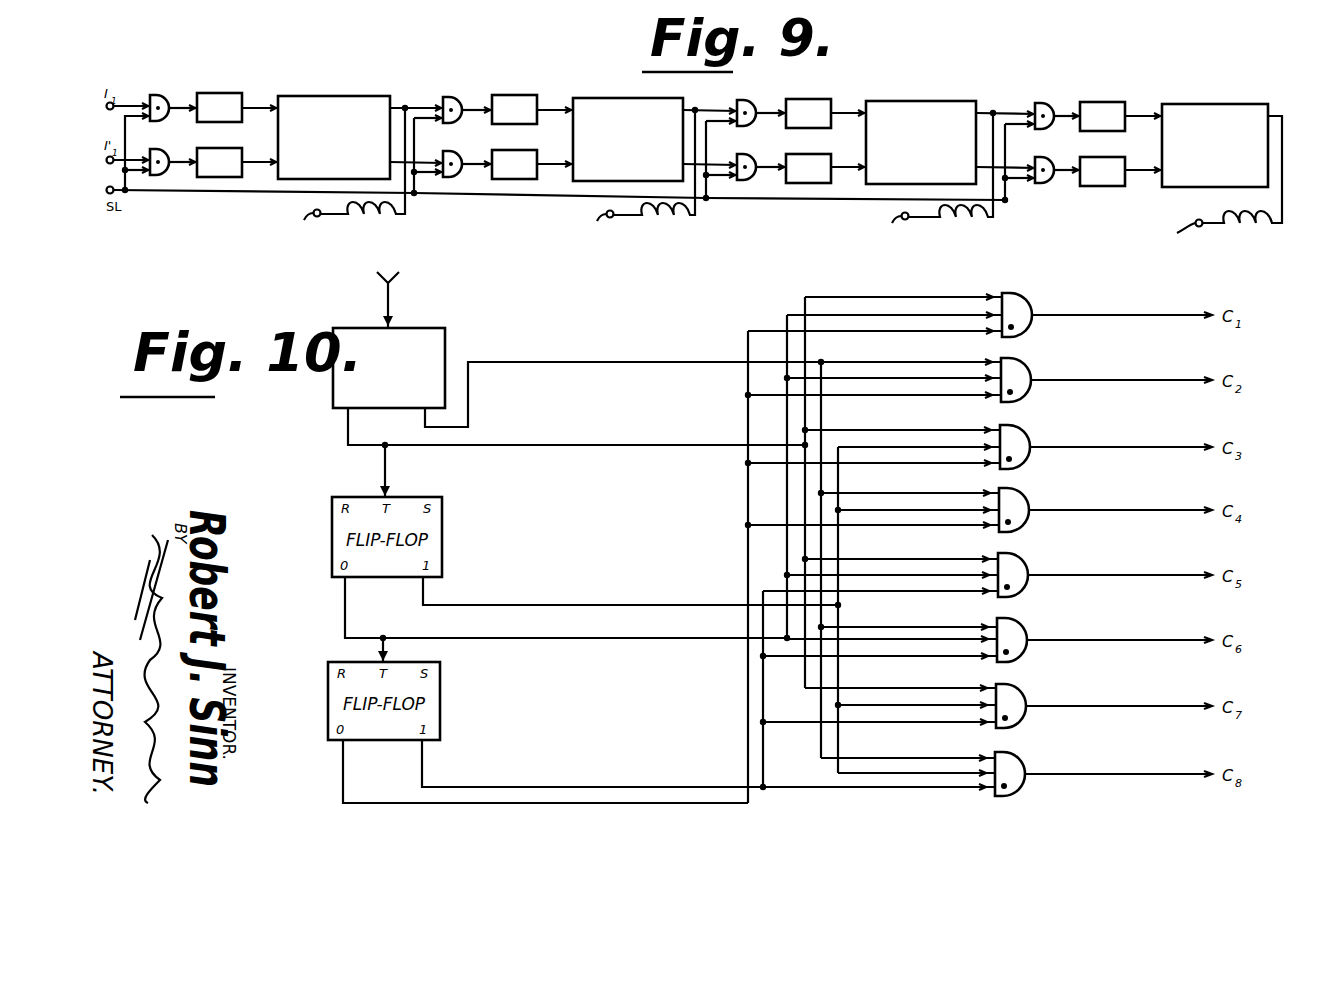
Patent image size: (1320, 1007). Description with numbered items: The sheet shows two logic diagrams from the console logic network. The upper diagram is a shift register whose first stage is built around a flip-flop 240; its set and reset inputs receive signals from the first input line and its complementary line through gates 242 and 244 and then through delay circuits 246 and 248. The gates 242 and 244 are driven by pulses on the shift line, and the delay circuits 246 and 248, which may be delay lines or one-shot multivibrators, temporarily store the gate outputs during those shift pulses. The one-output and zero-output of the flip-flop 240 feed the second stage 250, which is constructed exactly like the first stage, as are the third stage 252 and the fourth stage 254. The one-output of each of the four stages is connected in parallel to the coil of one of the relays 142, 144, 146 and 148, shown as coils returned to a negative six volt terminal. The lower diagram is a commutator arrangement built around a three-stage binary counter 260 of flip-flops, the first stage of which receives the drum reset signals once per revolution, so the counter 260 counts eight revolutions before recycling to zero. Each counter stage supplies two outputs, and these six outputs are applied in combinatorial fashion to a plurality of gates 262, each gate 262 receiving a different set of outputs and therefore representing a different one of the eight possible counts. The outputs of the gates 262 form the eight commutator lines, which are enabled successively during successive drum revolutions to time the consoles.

In FIG. 9, the flip-flop 240 is at (327, 96).
In FIG. 9, the gate 242 is at (164, 94).
In FIG. 9, the gate 244 is at (158, 177).
In FIG. 9, the delay circuit 246 is at (235, 93).
In FIG. 9, the delay circuit 248 is at (227, 179).
In FIG. 9, the second stage 250 is at (585, 75).
In FIG. 9, the third stage 252 is at (898, 87).
In FIG. 9, the fourth stage 254 is at (1167, 90).
In FIG. 9, the relay 142 is at (406, 216).
In FIG. 9, the relay 144 is at (694, 218).
In FIG. 9, the relay 146 is at (991, 218).
In FIG. 9, the relay 148 is at (1237, 217).
In FIG. 10, the three-stage binary counter 260 is at (447, 348).
In FIG. 10, the gate 262 is at (1030, 305).